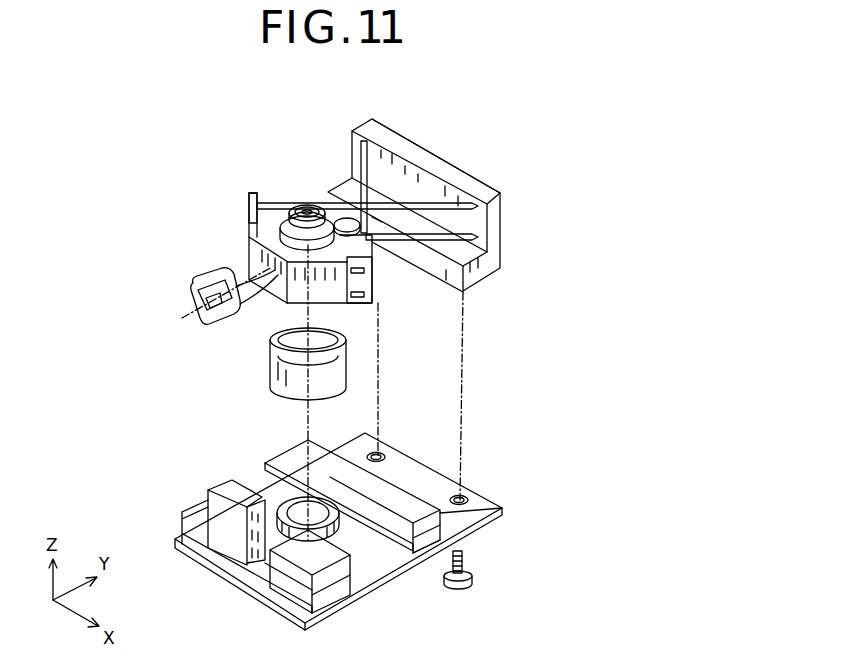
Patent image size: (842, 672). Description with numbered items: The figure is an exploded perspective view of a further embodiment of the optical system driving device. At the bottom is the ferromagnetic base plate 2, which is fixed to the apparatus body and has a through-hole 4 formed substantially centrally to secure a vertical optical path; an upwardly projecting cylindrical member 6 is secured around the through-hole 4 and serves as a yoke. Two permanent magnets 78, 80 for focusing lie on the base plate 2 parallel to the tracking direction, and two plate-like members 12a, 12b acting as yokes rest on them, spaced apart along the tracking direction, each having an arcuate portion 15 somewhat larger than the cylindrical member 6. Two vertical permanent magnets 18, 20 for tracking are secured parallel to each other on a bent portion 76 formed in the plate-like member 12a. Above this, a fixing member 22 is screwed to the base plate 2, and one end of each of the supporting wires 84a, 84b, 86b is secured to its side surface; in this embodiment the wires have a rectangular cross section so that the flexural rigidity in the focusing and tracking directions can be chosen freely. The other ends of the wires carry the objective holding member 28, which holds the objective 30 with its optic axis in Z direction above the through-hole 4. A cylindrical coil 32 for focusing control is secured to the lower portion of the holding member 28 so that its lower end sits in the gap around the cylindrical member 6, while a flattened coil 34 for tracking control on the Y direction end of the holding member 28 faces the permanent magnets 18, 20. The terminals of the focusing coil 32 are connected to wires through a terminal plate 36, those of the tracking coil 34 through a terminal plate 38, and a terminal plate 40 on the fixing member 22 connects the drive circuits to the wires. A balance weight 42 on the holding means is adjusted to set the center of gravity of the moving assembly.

The base plate 2 is at (482, 505).
The through-hole 4 is at (285, 478).
The cylindrical member 6 is at (338, 531).
The plate-like member 12a is at (302, 582).
The plate-like member 12b is at (380, 492).
The arcuate portion 15 is at (332, 490).
The permanent magnet 18 is at (214, 482).
The permanent magnet 20 is at (258, 497).
The fixing member 22 is at (497, 263).
The objective holding member 28 is at (262, 250).
The objective 30 is at (304, 207).
The cylindrical coil 32 is at (347, 366).
The flattened coil 34 is at (190, 290).
The terminal plate 36 is at (250, 207).
The terminal plate 38 is at (372, 280).
The terminal plate 40 is at (455, 170).
The balance weight 42 is at (346, 218).
The bent portion 76 is at (200, 553).
The permanent magnet 78 is at (323, 606).
The permanent magnet 80 is at (416, 553).
The wire 84a is at (362, 150).
The wire 84b is at (480, 206).
The wire 86b is at (480, 237).